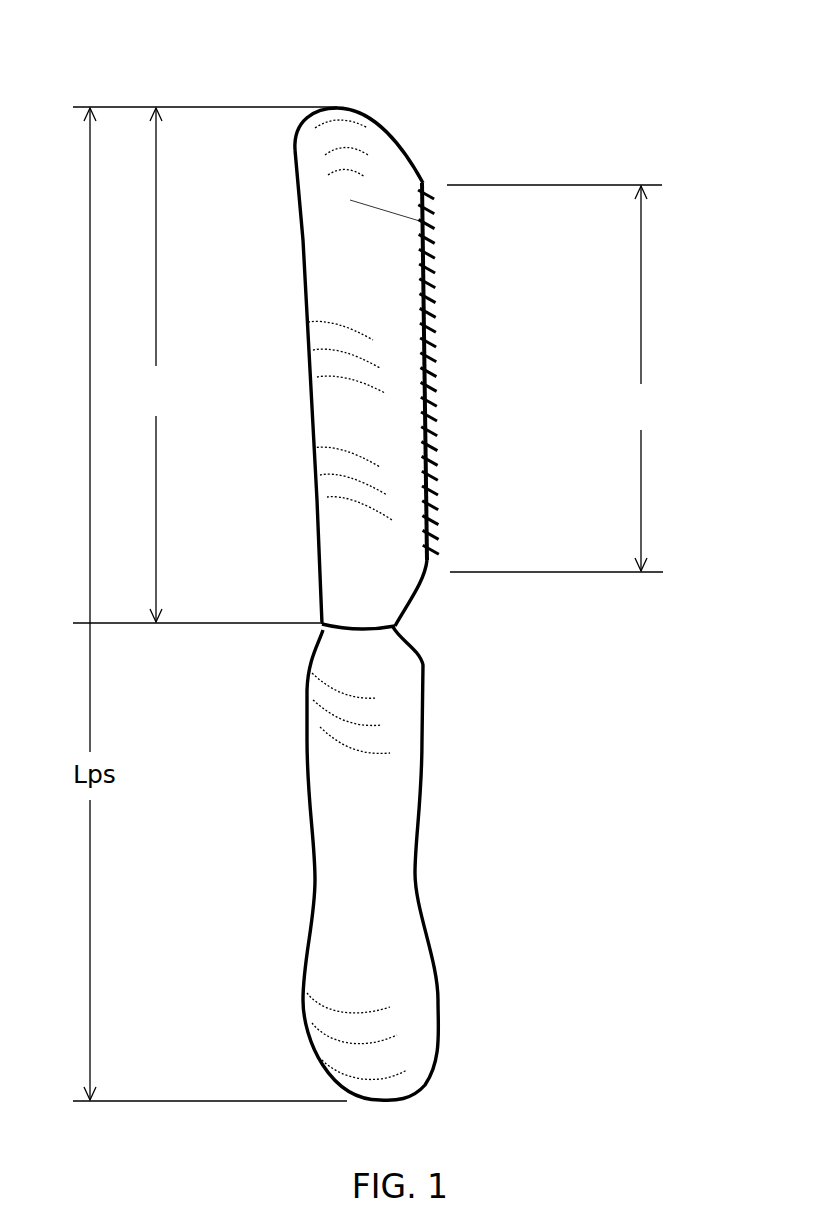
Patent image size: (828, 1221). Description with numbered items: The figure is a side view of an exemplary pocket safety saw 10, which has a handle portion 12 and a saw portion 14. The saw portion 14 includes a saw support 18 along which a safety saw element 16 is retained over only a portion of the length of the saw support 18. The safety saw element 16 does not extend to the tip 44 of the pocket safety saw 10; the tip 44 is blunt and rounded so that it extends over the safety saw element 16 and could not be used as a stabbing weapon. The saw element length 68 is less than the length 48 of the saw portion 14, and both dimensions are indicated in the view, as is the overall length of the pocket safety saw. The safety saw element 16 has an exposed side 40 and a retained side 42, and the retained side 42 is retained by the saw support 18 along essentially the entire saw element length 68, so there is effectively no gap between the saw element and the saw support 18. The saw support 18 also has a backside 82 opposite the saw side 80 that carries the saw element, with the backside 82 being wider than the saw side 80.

The pocket safety saw 10 is at (527, 669).
The handle portion 12 is at (410, 1002).
The saw portion 14 is at (387, 183).
The safety saw element 16 is at (433, 393).
The saw support 18 is at (357, 150).
The exposed side 40 is at (433, 303).
The retained side 42 is at (423, 222).
The tip 44 is at (337, 107).
The length of the saw portion 48 is at (205, 365).
The saw element length 68 is at (555, 378).
The saw side 80 is at (433, 482).
The backside 82 is at (303, 268).